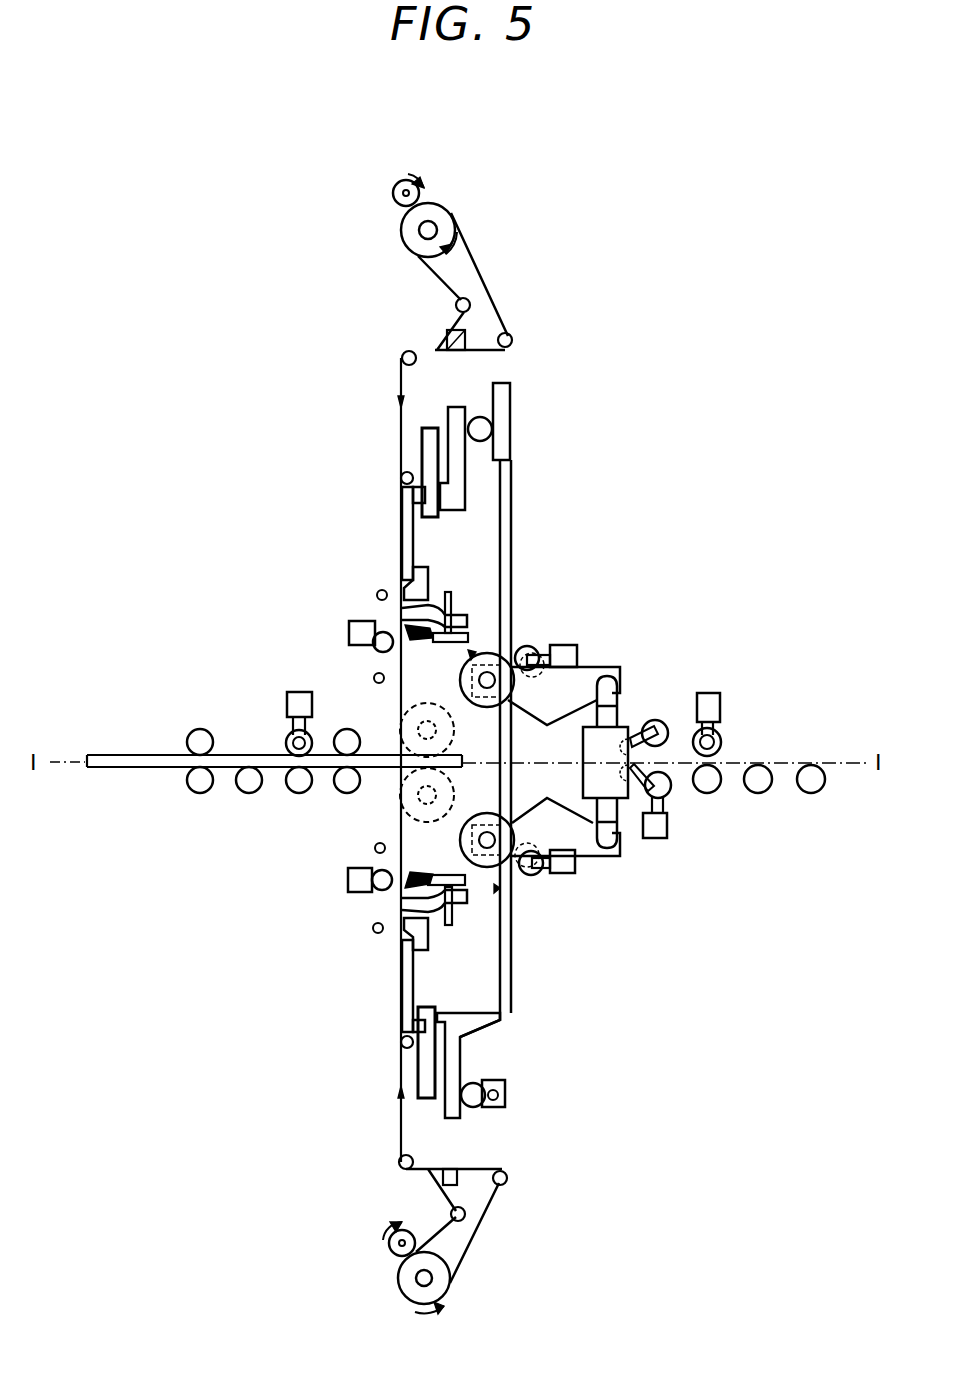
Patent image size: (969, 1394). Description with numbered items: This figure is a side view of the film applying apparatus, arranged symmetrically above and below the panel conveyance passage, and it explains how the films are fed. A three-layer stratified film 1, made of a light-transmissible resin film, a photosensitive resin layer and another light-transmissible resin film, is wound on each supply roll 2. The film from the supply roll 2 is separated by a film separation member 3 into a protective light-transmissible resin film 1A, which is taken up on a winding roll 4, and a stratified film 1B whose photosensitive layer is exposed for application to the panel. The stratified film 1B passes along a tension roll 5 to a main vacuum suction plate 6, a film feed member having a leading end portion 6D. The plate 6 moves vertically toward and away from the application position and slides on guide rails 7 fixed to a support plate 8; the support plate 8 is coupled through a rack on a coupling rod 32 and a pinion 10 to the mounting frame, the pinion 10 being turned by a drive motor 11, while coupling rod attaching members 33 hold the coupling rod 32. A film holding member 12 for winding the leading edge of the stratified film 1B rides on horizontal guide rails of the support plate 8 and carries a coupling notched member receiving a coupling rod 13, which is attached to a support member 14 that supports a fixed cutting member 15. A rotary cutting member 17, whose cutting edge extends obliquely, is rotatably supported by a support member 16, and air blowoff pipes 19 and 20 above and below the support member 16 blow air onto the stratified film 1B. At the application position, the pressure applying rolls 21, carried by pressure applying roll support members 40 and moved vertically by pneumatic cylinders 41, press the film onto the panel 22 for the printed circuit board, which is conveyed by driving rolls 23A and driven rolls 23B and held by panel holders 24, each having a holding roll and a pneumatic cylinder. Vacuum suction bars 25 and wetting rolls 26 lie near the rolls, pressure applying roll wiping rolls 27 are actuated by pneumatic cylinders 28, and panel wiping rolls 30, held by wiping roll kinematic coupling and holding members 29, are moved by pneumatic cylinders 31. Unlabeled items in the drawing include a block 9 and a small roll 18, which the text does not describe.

The three-layer stratified film 1 is at (452, 222).
The light-transmissible resin film 1A is at (393, 194).
The stratified film 1B is at (400, 380).
The supply roll 2 is at (431, 228).
The film separation member 3 is at (446, 333).
The winding roll 4 is at (404, 184).
The tension roll 5 is at (404, 355).
The main vacuum suction plate 6 is at (403, 535).
The leading end portion 6D is at (424, 578).
The guide rail 7 is at (424, 442).
The support plate 8 is at (455, 412).
The support block 9 is at (502, 436).
The pinion 10 is at (486, 428).
The drive motor 11 is at (506, 1093).
The film holding member 12 is at (453, 600).
The coupling rod 13 is at (473, 655).
The support member 14 is at (440, 645).
The fixed cutting member 15 is at (404, 615).
The support member 16 is at (348, 632).
The rotary cutting member 17 is at (374, 648).
The roller 18 is at (401, 478).
The air blowoff pipe 19 is at (375, 681).
The air blowoff pipe 20 is at (378, 593).
The pressure applying roll 21 is at (503, 662).
The panel 22 is at (98, 768).
The driving roll 23A is at (196, 785).
The driven roll 23B is at (196, 733).
The panel holder 24 is at (286, 700).
The vacuum suction bar 25 is at (535, 650).
The wetting roll 26 is at (410, 822).
The pressure applying roll wiping roll 27 is at (548, 655).
The pneumatic cylinder 28 is at (578, 650).
The wiping roll kinematic coupling and holding member 29 is at (640, 728).
The panel wiping roll 30 is at (662, 722).
The pneumatic cylinder 31 is at (668, 830).
The coupling rod 32 is at (506, 483).
The coupling rod attaching member 33 is at (512, 1016).
The pressure applying roll support member 40 is at (621, 668).
The pneumatic cylinder 41 is at (582, 745).